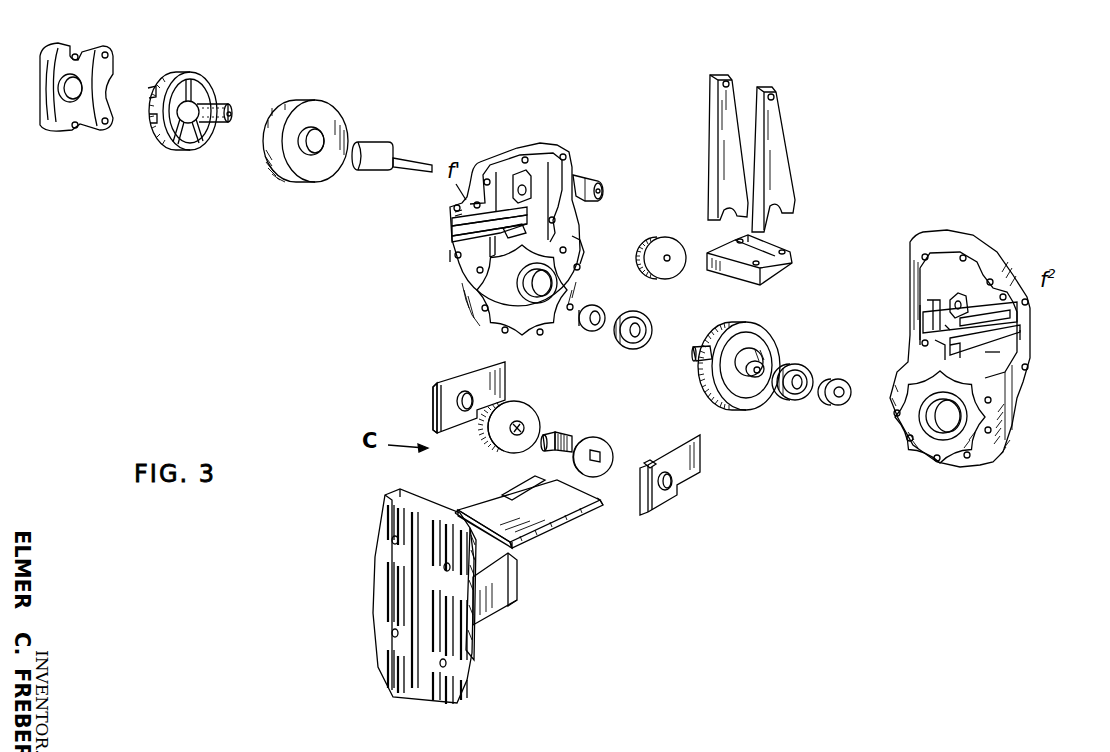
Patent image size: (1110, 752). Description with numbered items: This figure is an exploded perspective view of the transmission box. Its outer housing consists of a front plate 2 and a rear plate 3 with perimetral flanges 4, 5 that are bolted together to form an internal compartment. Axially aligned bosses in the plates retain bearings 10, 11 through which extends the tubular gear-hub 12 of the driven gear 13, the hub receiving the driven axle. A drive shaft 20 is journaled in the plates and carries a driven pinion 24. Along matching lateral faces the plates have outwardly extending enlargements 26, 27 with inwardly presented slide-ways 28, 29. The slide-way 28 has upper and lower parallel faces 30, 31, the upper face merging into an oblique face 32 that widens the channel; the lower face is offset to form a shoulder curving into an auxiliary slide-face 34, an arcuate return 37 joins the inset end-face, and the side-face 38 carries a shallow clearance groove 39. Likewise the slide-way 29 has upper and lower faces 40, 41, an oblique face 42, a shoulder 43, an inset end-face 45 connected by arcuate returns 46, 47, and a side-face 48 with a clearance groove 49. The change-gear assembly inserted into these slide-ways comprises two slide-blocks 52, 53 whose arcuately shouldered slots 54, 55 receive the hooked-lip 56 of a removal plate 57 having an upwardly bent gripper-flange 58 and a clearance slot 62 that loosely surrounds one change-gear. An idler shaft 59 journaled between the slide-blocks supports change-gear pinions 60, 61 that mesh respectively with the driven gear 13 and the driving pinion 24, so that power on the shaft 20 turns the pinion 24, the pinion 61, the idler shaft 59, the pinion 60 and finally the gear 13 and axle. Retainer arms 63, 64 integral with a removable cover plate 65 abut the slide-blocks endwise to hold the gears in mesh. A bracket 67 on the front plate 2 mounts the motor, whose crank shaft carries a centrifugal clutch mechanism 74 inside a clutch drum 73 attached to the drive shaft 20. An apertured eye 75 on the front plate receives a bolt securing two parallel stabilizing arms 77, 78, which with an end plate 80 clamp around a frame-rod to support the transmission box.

The front plate 2 is at (466, 320).
The rear plate 3 is at (996, 458).
The perimetral flange 4 is at (537, 337).
The perimetral flange 5 is at (913, 452).
The bearing 10 is at (651, 327).
The bearing 11 is at (811, 378).
The tubular gear-hub 12 is at (697, 355).
The driven gear 13 is at (765, 342).
The drive shaft 20 is at (388, 154).
The driven pinion 24 is at (665, 242).
The enlargement 26 is at (466, 204).
The enlargement 27 is at (1021, 385).
The slide-way 28 is at (449, 258).
The slide-way 29 is at (1038, 335).
The upper face 30 is at (515, 198).
The lower face 31 is at (492, 250).
The oblique face 32 is at (450, 220).
The auxiliary slide-face 34 is at (577, 247).
The arcuate return 37 is at (512, 236).
The side-face 38 is at (450, 240).
The clearance groove 39 is at (450, 231).
The upper face 40 is at (966, 300).
The lower face 41 is at (995, 360).
The oblique face 42 is at (1022, 315).
The shoulder 43 is at (964, 360).
The end-face 45 is at (950, 327).
The arcuate return 46 is at (936, 304).
The arcuate return 47 is at (942, 350).
The side-face 48 is at (1022, 350).
The clearance groove 49 is at (1012, 322).
The slide-block 52 is at (482, 370).
The slide-block 53 is at (702, 477).
The arcuately shouldered slot 54 is at (436, 389).
The arcuately shouldered slot 55 is at (647, 466).
The hooked-lip 56 is at (600, 502).
The removal plate 57 is at (548, 522).
The gripper-flange 58 is at (463, 508).
The idler shaft 59 is at (560, 433).
The change-gear pinion 60 is at (527, 411).
The change-gear pinion 61 is at (598, 441).
The clearance slot 62 is at (523, 477).
The retainer arm 63 is at (475, 546).
The retainer arm 64 is at (518, 591).
The cover plate 65 is at (375, 613).
The bracket 67 is at (40, 87).
The clutch drum 73 is at (335, 120).
The clutch mechanism 74 is at (220, 102).
The eye 75 is at (600, 185).
The stabilizing arm 77 is at (793, 162).
The stabilizing arm 78 is at (708, 152).
The end plate 80 is at (780, 277).